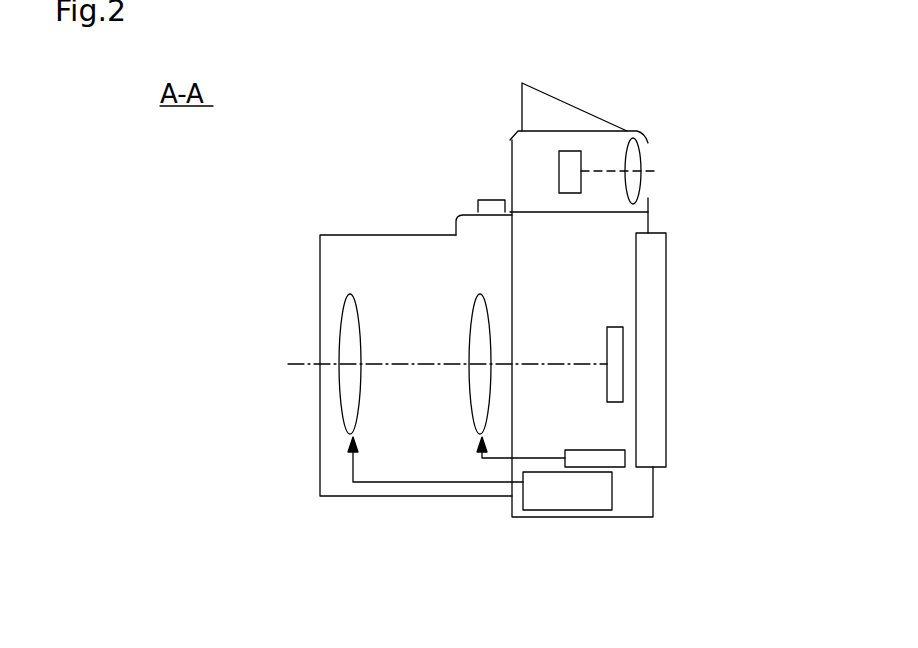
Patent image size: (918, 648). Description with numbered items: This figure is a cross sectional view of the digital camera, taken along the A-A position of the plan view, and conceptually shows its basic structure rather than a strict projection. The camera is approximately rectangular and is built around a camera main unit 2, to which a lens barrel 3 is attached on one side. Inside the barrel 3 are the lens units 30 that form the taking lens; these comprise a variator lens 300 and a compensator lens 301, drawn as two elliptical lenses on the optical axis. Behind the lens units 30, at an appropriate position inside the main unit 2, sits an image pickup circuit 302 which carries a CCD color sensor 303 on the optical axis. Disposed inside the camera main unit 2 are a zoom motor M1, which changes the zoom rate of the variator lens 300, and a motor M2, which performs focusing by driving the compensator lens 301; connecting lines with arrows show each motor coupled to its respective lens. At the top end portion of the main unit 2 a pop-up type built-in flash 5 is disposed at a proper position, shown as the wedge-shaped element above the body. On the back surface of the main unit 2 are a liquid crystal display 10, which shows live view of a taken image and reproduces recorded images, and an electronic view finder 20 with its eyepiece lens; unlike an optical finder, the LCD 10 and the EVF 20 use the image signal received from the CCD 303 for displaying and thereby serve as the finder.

The camera main unit 2 is at (676, 233).
The lens barrel 3 is at (419, 507).
The built-in flash 5 is at (495, 122).
The liquid crystal display 10 is at (667, 422).
The electronic view finder 20 is at (662, 156).
The lens units 30 is at (434, 178).
The variator lens 300 is at (350, 294).
The compensator lens 301 is at (480, 294).
The image pickup circuit 302 is at (579, 306).
The CCD color sensor 303 is at (616, 327).
The zoom motor M1 is at (558, 510).
The motor M2 is at (588, 450).